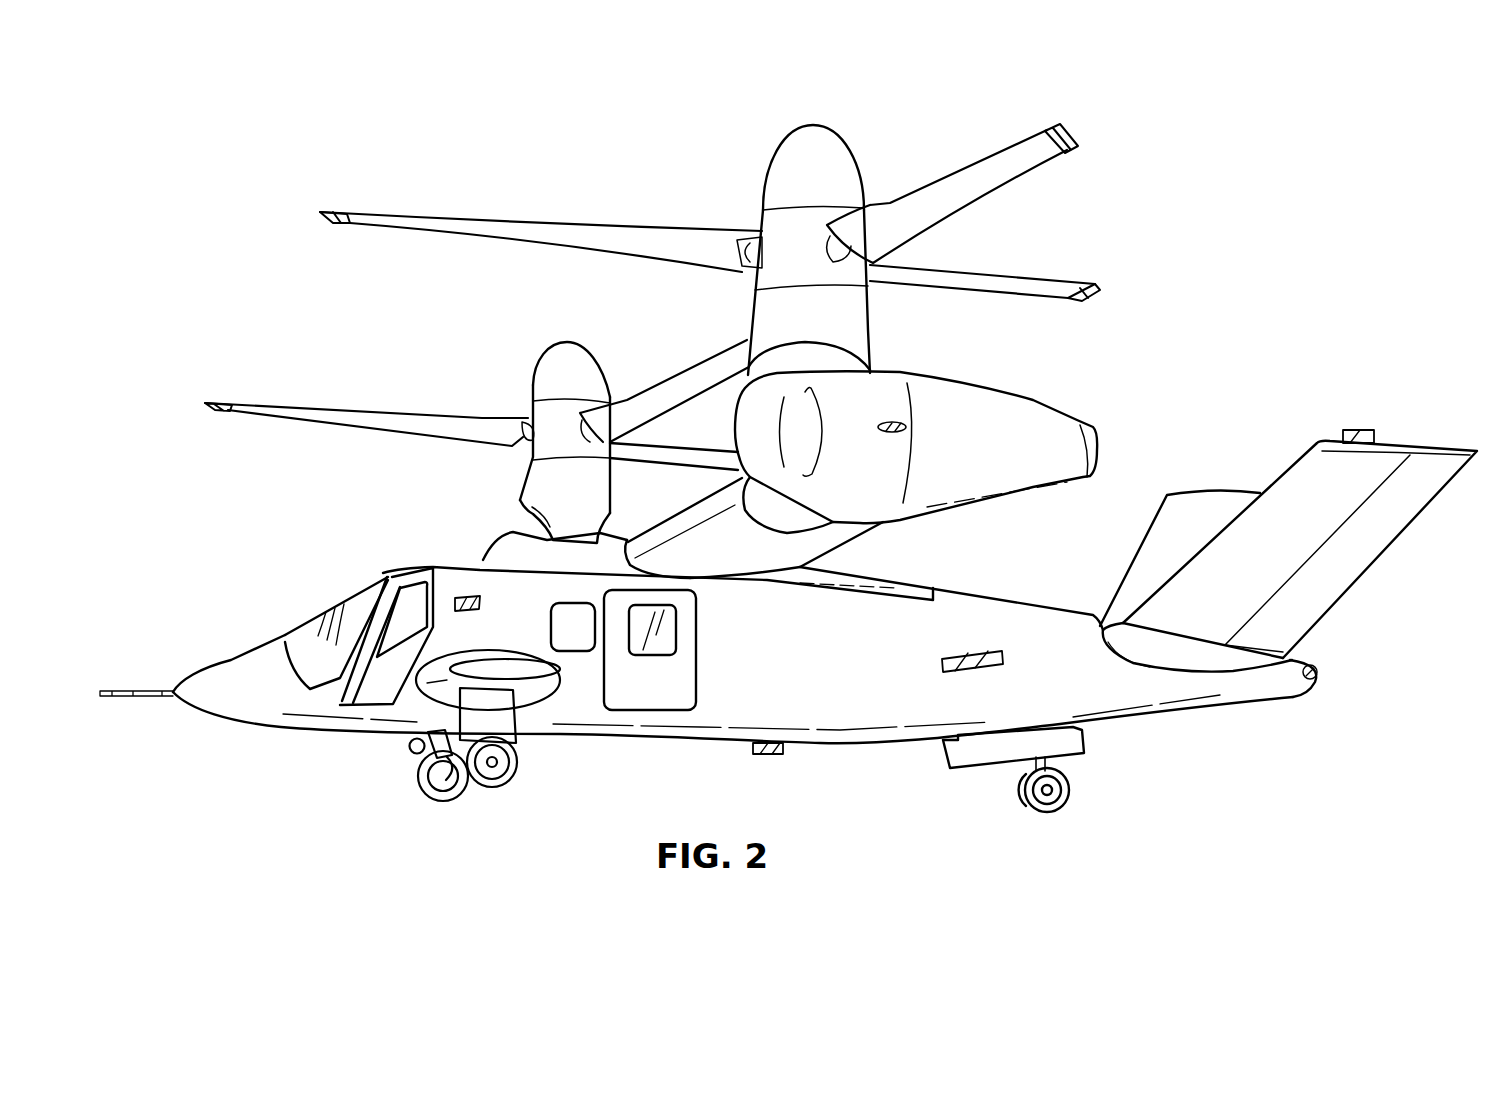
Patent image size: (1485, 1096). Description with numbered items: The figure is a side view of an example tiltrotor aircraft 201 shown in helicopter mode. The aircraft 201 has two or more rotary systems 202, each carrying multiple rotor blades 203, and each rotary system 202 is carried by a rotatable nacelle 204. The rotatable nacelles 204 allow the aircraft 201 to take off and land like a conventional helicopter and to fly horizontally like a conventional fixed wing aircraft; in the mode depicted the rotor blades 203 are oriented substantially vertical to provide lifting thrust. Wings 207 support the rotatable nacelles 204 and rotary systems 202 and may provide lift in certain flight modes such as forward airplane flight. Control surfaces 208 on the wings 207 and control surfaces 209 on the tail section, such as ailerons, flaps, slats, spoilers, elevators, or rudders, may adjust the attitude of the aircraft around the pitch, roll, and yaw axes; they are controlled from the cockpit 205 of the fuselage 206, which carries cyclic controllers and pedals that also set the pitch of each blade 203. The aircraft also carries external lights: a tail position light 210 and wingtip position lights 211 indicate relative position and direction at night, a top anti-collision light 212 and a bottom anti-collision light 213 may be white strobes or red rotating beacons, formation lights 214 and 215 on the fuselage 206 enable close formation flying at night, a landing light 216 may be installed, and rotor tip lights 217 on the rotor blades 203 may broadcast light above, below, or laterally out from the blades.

The tiltrotor aircraft 201 is at (1232, 204).
The rotary system 202 is at (750, 176).
The rotor blade 203 is at (518, 223).
The rotatable nacelle 204 is at (732, 330).
The cockpit 205 is at (310, 622).
The fuselage 206 is at (850, 745).
The wing 207 is at (707, 532).
The control surface 208 is at (837, 555).
The control surface 209 is at (1203, 492).
The tail position light 210 is at (1293, 697).
The wingtip position light 211 is at (900, 420).
The top anti-collision light 212 is at (1358, 430).
The bottom anti-collision light 213 is at (770, 754).
The formation light 214 is at (975, 647).
The formation light 215 is at (467, 595).
The landing light 216 is at (405, 748).
The rotor tip light 217 is at (332, 212).